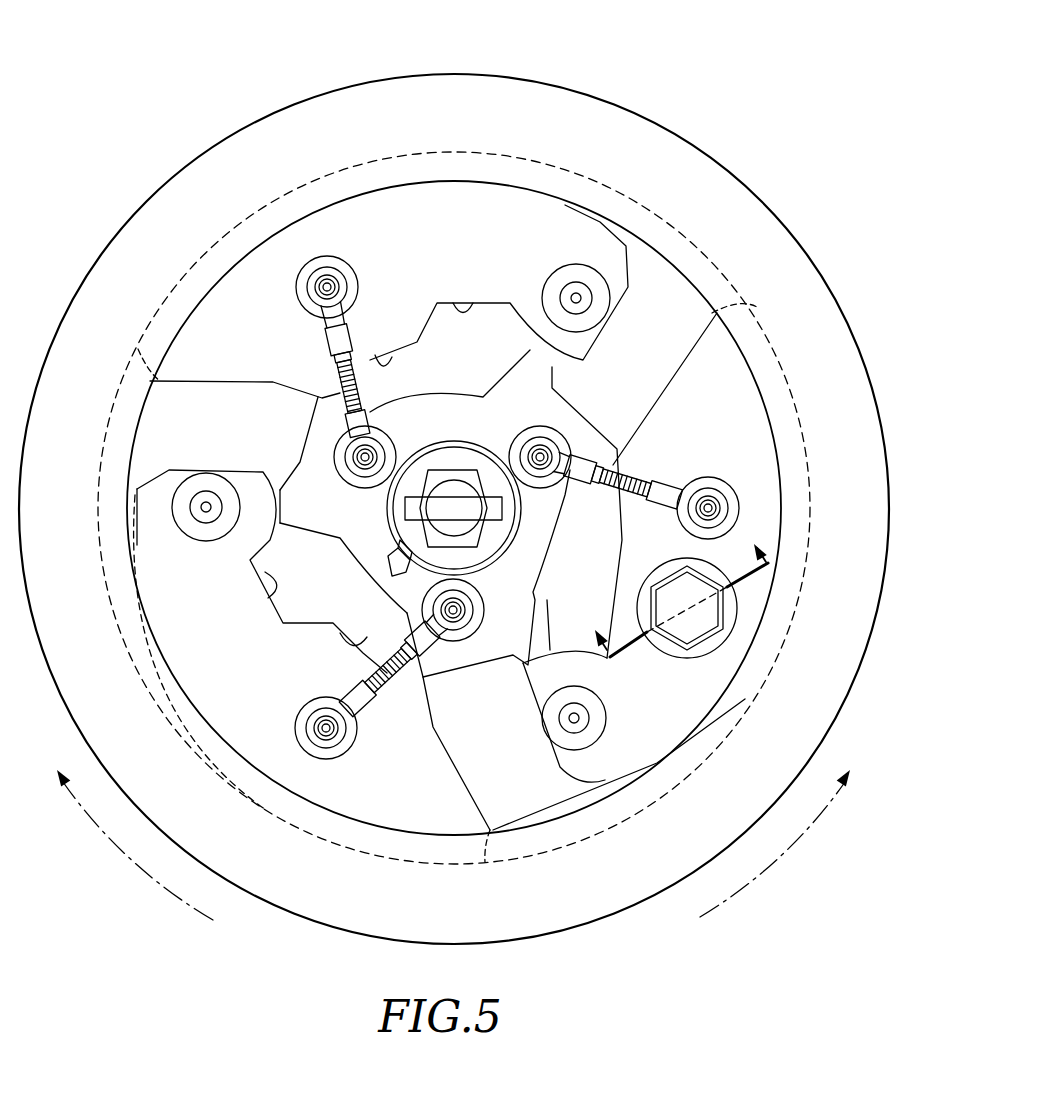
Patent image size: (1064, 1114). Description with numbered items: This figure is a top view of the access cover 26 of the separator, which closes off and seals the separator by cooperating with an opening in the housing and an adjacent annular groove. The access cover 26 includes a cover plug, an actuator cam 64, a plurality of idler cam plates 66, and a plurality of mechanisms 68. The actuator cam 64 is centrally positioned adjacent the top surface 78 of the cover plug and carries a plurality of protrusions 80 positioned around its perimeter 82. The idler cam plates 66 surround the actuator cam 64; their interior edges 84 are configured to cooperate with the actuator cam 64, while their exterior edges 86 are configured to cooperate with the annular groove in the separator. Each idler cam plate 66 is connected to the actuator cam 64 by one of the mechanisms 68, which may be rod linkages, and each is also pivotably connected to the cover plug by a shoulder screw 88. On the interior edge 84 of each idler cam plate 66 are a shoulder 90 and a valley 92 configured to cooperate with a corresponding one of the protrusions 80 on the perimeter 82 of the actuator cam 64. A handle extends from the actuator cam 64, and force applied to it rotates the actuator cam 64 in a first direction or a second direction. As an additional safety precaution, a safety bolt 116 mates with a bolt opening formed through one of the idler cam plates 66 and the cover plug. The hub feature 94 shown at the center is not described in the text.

The access cover 26 is at (688, 97).
The actuator cam 64 is at (600, 392).
The idler cam plates 66 is at (378, 218).
The mechanisms 68 is at (306, 352).
The top surface 78 is at (38, 530).
The protrusions 80 is at (505, 350).
The perimeter 82 is at (328, 584).
The interior edges 84 is at (388, 345).
The exterior edges 86 is at (245, 215).
The shoulder screw 88 is at (548, 282).
The shoulder 90 is at (295, 518).
The valley 92 is at (455, 300).
The hub 94 is at (436, 428).
The safety bolt 116 is at (724, 674).